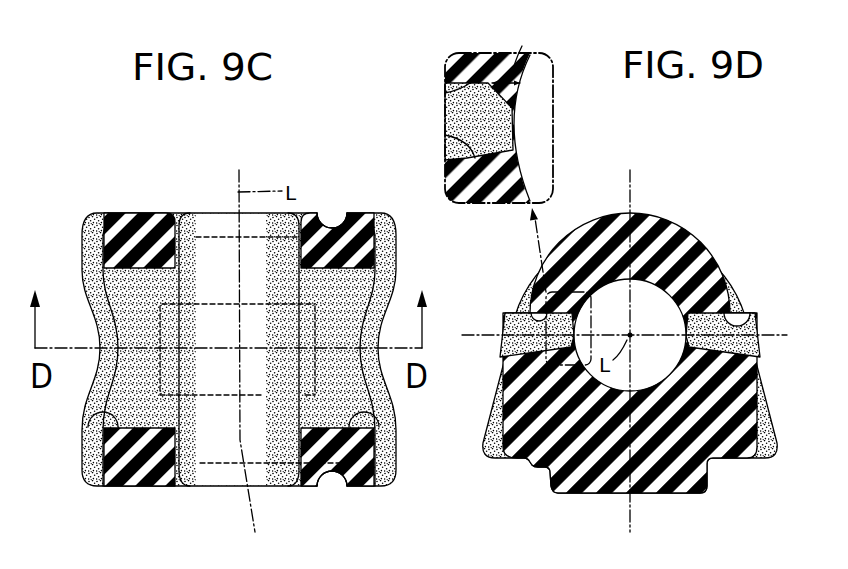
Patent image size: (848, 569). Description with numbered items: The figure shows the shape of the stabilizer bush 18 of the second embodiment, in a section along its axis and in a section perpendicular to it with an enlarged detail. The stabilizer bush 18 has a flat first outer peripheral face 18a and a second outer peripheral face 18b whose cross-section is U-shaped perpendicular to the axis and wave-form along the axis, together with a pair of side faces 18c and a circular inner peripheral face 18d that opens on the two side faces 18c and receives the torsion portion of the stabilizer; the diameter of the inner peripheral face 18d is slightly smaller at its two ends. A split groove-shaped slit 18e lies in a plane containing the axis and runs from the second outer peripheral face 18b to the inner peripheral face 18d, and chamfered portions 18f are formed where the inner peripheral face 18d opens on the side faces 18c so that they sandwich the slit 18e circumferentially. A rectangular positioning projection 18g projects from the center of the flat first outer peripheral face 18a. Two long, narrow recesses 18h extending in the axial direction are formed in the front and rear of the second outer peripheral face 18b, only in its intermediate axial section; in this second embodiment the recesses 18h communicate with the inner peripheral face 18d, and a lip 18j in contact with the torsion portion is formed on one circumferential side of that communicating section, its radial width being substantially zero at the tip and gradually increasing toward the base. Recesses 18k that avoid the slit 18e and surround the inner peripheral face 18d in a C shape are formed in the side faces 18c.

In FIG. 9C, the stabilizer bush 18 is at (122, 192).
In FIG. 9D, the stabilizer bush 18 is at (716, 214).
In FIG. 9D, the first outer peripheral face 18a is at (531, 468).
In FIG. 9C, the second outer peripheral face 18b is at (386, 265).
In FIG. 9D, the second outer peripheral face 18b is at (664, 203).
In FIG. 9C, the side face 18c is at (141, 212).
In FIG. 9C, the inner peripheral face 18d is at (190, 287).
In FIG. 9D, the inner peripheral face 18d is at (594, 296).
In FIG. 9C, the slit 18e is at (82, 298).
In FIG. 9D, the slit 18e is at (446, 138).
In FIG. 9C, the chamfered portion 18f is at (177, 213).
In FIG. 9C, the positioning projection 18g is at (259, 397).
In FIG. 9D, the positioning projection 18g is at (682, 494).
In FIG. 9C, the recess 18h is at (88, 415).
In FIG. 9D, the recess 18h is at (512, 320).
In FIG. 9D, the lip 18j is at (516, 100).
In FIG. 9C, the recess 18k is at (324, 226).